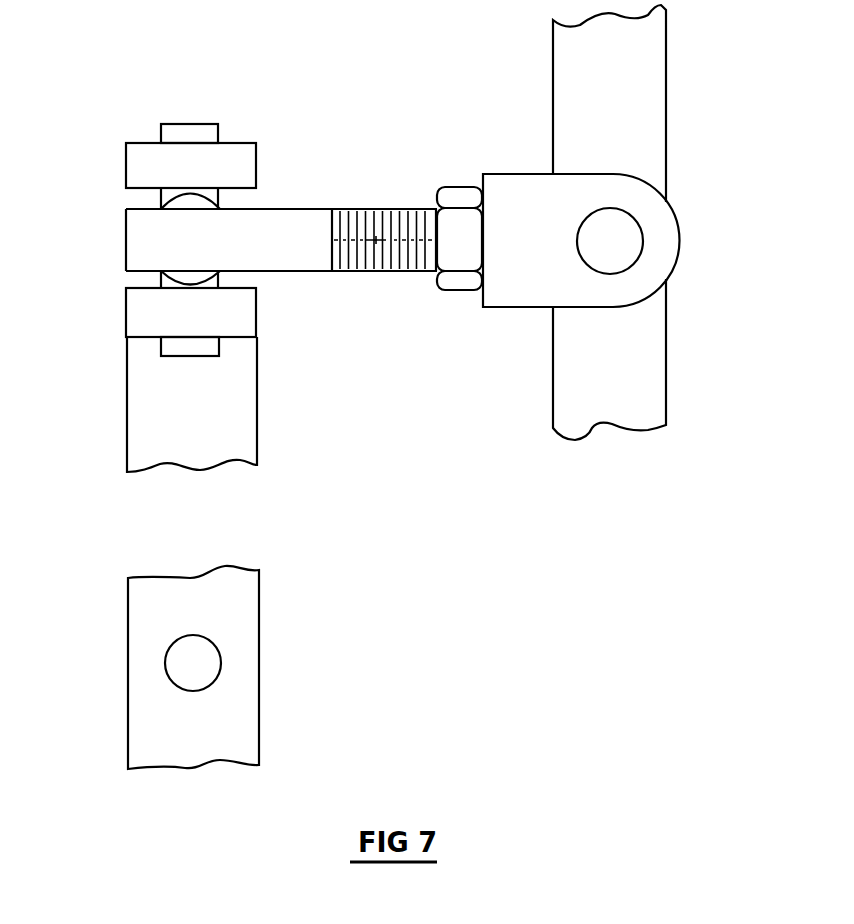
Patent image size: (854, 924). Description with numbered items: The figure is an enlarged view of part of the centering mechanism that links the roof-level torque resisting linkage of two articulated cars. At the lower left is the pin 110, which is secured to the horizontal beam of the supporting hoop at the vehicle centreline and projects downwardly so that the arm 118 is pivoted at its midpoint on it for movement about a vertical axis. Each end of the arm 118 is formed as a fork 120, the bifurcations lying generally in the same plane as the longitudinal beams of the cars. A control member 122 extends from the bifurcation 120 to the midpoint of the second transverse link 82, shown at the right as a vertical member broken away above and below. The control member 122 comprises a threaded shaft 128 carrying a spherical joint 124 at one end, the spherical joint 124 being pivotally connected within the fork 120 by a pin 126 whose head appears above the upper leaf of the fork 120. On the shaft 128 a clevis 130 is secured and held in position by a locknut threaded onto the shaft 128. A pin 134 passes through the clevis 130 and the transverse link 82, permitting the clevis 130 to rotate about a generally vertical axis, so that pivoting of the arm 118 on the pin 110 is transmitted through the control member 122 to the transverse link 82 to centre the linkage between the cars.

The second transverse link 82 is at (628, 382).
The pin 110 is at (183, 665).
The arm 118 is at (151, 415).
The fork 120 is at (121, 187).
The control member 122 is at (395, 200).
The spherical joint 124 is at (161, 204).
The pin 126 is at (175, 124).
The threaded shaft 128 is at (373, 253).
The clevis 130 is at (667, 232).
The pin 134 is at (620, 227).